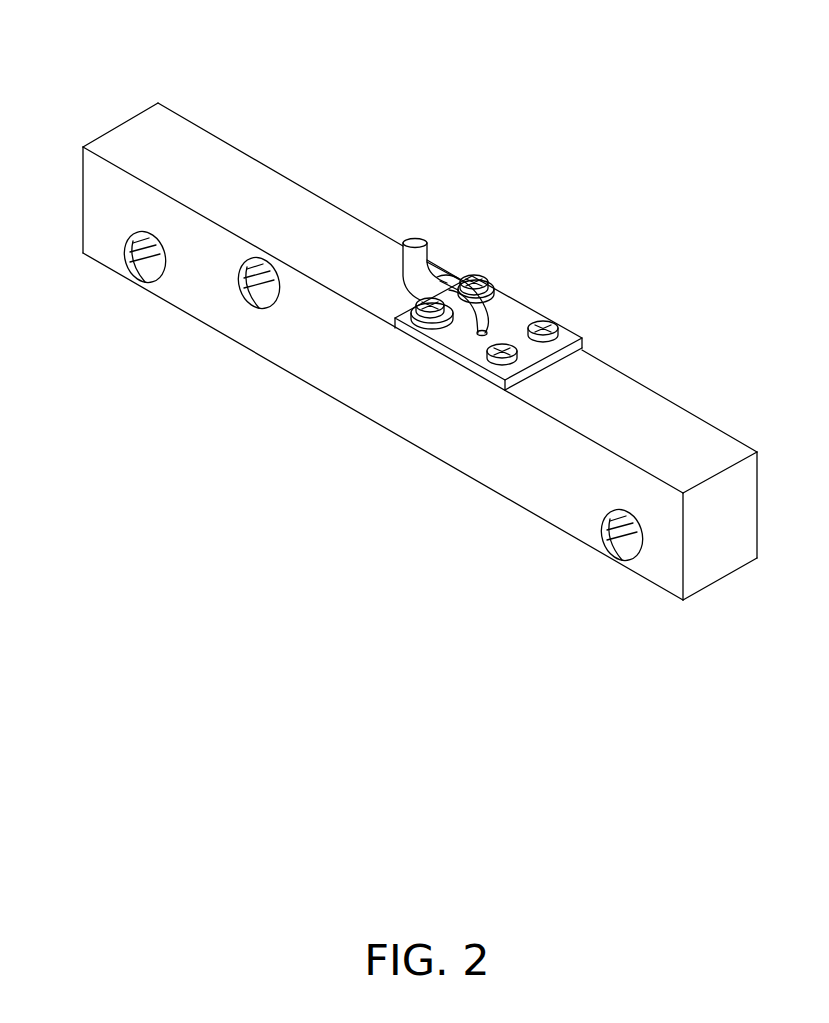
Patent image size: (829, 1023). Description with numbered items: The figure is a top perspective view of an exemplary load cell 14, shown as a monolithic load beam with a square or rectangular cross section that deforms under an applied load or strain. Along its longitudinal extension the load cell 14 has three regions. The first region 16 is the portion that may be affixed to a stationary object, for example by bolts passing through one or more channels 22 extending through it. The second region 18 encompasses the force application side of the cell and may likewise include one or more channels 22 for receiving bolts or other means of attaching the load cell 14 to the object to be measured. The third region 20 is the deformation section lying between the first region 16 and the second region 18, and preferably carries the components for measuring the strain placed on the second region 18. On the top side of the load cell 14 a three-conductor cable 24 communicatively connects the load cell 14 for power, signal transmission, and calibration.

The load cell 14 is at (110, 66).
The first region 16 is at (642, 402).
The second region 18 is at (214, 154).
The third region 20 is at (377, 404).
The channels 22 is at (152, 272).
The three-conductor cable 24 is at (413, 242).